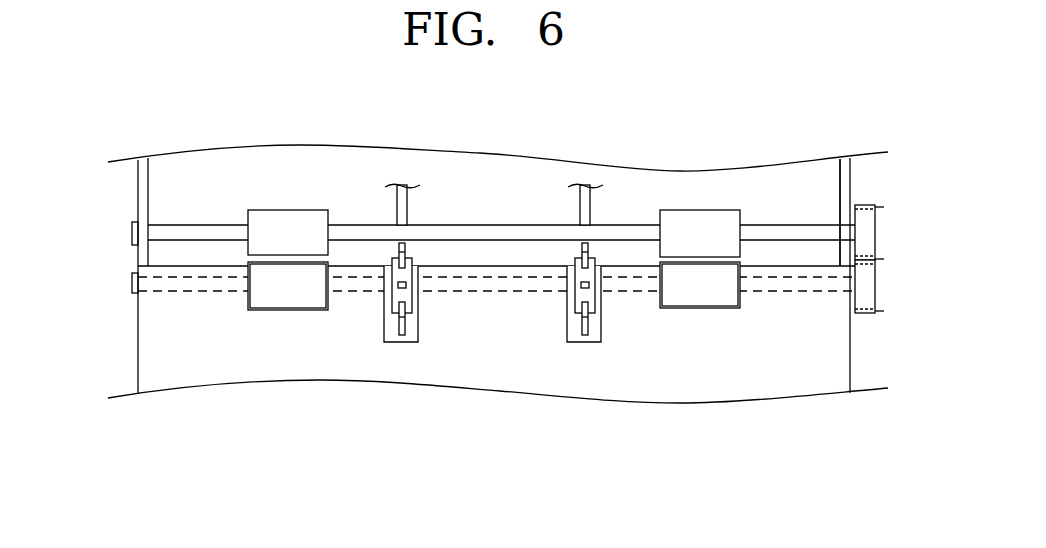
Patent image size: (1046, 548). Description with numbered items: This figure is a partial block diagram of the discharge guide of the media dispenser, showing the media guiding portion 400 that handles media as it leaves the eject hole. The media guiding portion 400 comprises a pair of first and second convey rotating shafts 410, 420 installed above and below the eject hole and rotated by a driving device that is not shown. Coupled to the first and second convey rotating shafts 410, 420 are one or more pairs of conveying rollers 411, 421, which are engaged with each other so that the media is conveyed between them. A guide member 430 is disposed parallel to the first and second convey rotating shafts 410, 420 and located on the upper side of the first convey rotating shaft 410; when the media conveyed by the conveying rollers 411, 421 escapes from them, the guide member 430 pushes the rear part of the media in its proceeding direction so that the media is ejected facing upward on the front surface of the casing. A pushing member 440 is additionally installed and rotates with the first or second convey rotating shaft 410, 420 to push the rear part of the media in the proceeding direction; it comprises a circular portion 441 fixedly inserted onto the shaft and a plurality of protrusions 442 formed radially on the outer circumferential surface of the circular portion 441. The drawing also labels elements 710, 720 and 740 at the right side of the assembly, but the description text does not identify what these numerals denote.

The media guiding portion 400 is at (134, 208).
The first convey rotating shaft 410 is at (165, 235).
The conveying roller 411 is at (282, 225).
The second convey rotating shaft 420 is at (158, 285).
The conveying roller 421 is at (286, 295).
The guide member 430 is at (408, 202).
The pushing member 440 is at (485, 353).
The circular portion 441 is at (395, 298).
The protrusions 442 is at (585, 328).
The moving block 710 is at (700, 290).
The connecting member 720 is at (884, 291).
The support frame 740 is at (821, 206).